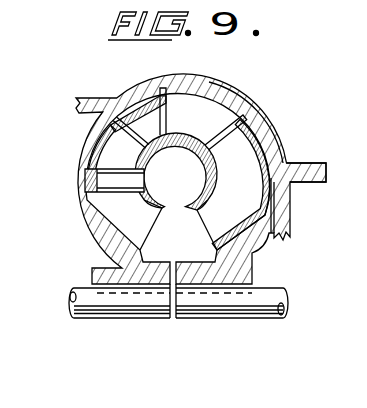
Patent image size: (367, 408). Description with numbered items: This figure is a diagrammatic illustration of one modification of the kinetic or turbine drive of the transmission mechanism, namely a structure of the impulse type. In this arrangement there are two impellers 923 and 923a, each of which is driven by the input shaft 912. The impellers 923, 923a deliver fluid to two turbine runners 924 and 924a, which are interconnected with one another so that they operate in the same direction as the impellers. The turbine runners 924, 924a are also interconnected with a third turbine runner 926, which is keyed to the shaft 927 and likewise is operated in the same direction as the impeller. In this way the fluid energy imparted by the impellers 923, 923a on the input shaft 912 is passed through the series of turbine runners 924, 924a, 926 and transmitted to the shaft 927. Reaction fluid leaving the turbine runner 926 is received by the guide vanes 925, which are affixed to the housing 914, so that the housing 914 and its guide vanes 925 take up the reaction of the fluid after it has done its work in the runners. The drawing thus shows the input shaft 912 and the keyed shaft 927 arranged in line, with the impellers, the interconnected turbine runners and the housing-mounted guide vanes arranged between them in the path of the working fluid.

The input shaft 912 is at (100, 320).
The housing 914 is at (298, 163).
The impeller 923 is at (115, 225).
The impeller 923a is at (108, 152).
The turbine runner 924 is at (85, 182).
The turbine runner 924a is at (128, 97).
The guide vanes 925 is at (205, 107).
The third turbine runner 926 is at (262, 118).
The shaft 927 is at (246, 319).